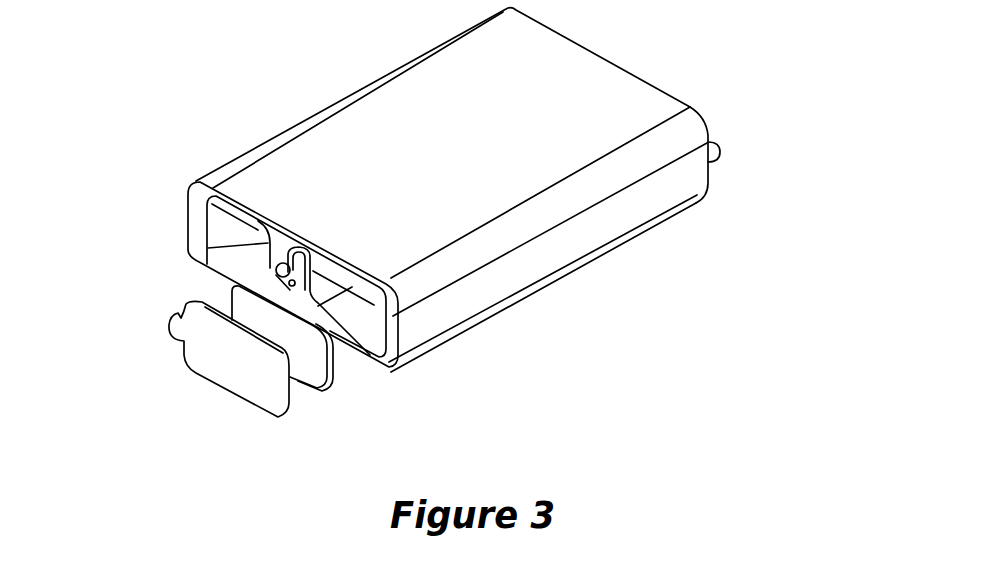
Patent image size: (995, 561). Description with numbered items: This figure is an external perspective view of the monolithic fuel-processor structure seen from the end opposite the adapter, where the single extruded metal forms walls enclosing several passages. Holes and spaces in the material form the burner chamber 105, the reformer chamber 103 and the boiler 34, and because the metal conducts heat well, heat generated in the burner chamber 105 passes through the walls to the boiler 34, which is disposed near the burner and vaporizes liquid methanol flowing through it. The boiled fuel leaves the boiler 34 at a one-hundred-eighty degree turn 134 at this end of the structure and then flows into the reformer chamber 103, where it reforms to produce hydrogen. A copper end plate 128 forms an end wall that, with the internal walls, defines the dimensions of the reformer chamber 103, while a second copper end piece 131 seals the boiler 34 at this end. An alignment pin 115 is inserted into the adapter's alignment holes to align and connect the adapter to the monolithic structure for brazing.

The burner chamber 105 is at (225, 223).
The reformer chamber 103 is at (362, 305).
The alignment pin 115 is at (720, 145).
The boiler 34 is at (287, 267).
The 180 degree turn 134 is at (293, 275).
The copper end plate 128 is at (302, 352).
The second copper end piece 131 is at (238, 372).